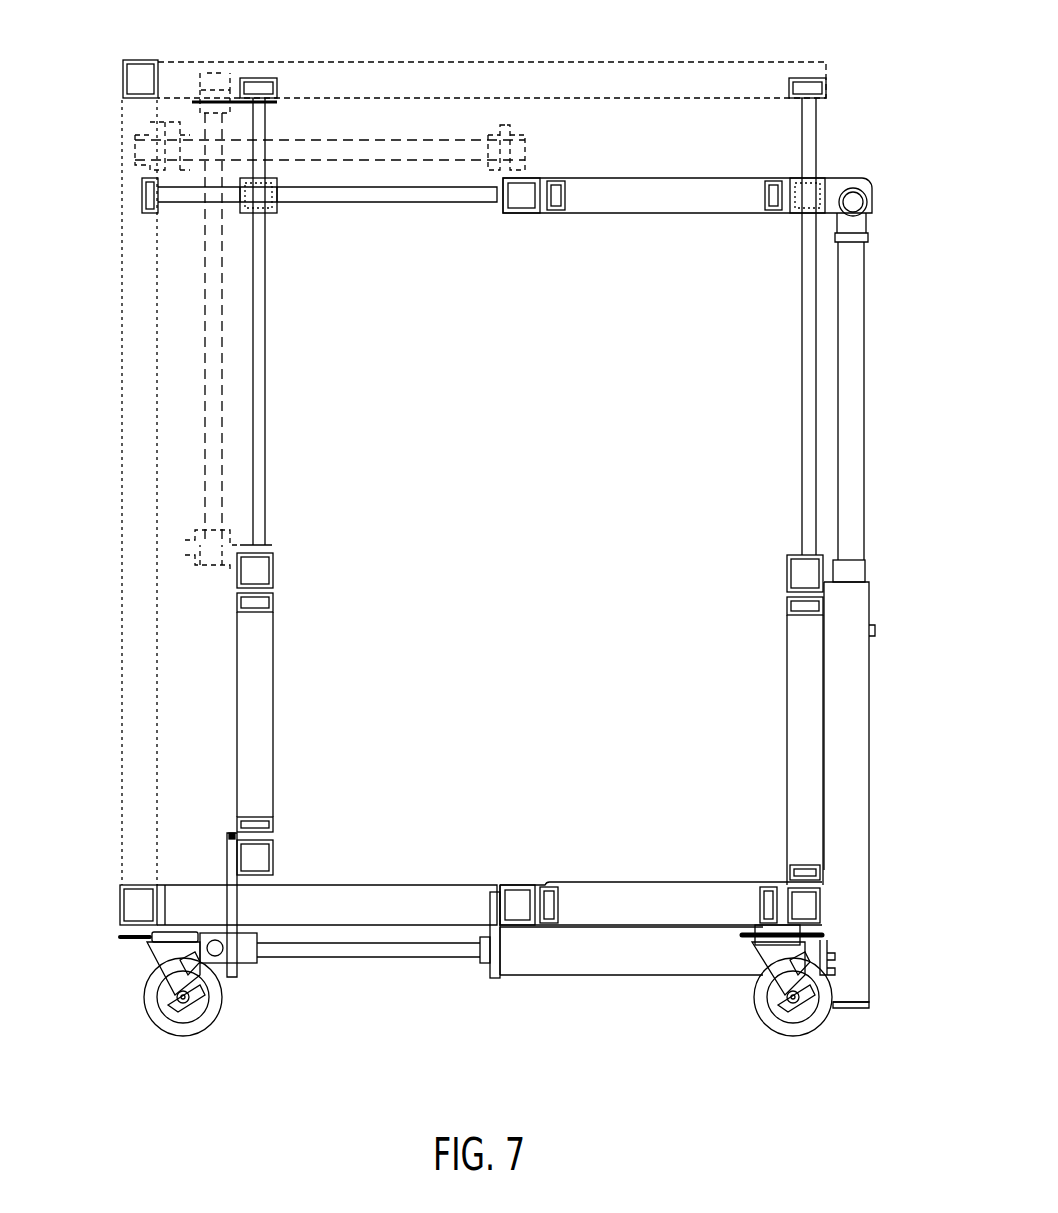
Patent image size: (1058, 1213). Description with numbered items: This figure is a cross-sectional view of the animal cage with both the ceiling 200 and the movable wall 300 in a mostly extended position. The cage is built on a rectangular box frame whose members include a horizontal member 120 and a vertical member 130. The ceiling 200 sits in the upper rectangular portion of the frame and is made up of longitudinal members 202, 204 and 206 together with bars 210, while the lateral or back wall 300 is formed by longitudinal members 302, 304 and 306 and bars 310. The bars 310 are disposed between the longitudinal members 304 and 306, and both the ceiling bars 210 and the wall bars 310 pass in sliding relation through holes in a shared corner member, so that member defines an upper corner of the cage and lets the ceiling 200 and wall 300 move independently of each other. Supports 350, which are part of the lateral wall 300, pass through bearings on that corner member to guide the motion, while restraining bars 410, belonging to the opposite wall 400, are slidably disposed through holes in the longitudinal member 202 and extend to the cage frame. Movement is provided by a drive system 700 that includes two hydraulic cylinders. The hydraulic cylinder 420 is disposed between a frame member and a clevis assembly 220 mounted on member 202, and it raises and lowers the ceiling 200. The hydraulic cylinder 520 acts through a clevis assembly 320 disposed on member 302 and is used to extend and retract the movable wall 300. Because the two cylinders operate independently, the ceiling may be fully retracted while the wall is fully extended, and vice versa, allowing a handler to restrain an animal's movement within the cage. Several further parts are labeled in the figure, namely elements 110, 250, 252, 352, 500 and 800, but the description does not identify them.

The upper frame member 110 is at (447, 80).
The horizontal member 120 is at (205, 1010).
The vertical member 130 is at (143, 452).
The ceiling 200 is at (657, 228).
The longitudinal member 202 is at (792, 176).
The longitudinal member 204 is at (520, 202).
The longitudinal member 206 is at (150, 213).
The bars 210 is at (370, 197).
The clevis assembly 220 is at (850, 458).
The clamp bar 250 is at (360, 150).
The clamp 252 is at (160, 168).
The movable wall 300 is at (290, 508).
The longitudinal member 302 is at (258, 855).
The longitudinal member 304 is at (260, 572).
The longitudinal member 306 is at (262, 78).
The bars 310 is at (258, 383).
The clevis assembly 320 is at (400, 965).
The supports 350 is at (213, 335).
The rod clamp 352 is at (218, 75).
The wall 400 is at (868, 330).
The restraining bars 410 is at (810, 143).
The hydraulic cylinder 420 is at (855, 893).
The base assembly 500 is at (412, 1024).
The hydraulic cylinder 520 is at (640, 965).
The drive system 700 is at (655, 992).
The connector block 800 is at (270, 215).